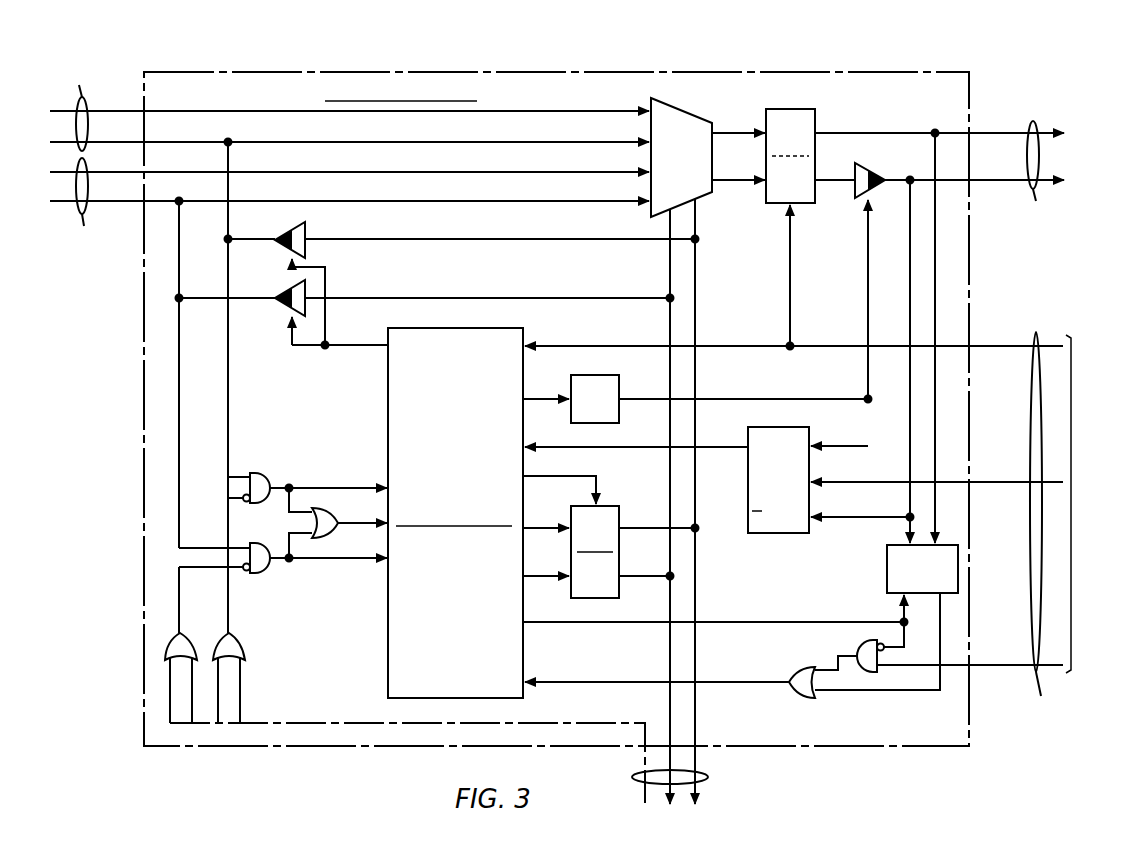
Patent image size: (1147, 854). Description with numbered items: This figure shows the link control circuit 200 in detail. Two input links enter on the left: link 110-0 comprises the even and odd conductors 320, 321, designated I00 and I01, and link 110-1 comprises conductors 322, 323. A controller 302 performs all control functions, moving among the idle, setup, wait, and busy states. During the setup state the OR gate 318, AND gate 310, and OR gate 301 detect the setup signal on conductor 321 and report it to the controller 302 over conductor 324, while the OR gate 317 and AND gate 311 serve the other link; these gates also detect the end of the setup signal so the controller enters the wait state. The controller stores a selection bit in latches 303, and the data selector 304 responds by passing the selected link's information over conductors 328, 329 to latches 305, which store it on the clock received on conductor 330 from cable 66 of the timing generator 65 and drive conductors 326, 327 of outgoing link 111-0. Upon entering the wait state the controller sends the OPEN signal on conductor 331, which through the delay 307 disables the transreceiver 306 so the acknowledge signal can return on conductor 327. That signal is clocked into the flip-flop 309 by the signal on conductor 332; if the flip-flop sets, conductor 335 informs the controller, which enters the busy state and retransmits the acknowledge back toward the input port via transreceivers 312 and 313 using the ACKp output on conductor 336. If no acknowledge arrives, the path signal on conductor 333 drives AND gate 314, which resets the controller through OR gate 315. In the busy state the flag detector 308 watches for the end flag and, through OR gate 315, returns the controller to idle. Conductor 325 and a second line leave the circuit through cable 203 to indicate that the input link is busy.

The link control circuit 200 is at (968, 64).
The link 110-0 is at (70, 99).
The link 110-1 is at (72, 213).
The link 111-0 is at (1032, 183).
The conductor 320 is at (160, 111).
The conductor 321 is at (160, 142).
The conductor 322 is at (160, 172).
The conductor 323 is at (160, 201).
The data selector 304 is at (655, 99).
The conductor 328 is at (740, 130).
The conductor 329 is at (740, 178).
The latches 305 is at (775, 109).
The transreceiver 306 is at (860, 167).
The conductor 326 is at (1000, 127).
The conductor 327 is at (1000, 174).
The transreceiver 313 is at (279, 227).
The transreceiver 312 is at (279, 287).
The conductor 336 is at (356, 343).
The controller 302 is at (468, 328).
The delay 307 is at (583, 375).
The conductor 331 is at (545, 394).
The conductor 335 is at (548, 442).
The latches 303 is at (606, 506).
The flip-flop 309 is at (760, 427).
The conductor 330 is at (996, 343).
The conductor 332 is at (998, 478).
The conductor 333 is at (1000, 663).
The AND gate 310 is at (257, 473).
The AND gate 311 is at (262, 573).
The OR gate 301 is at (332, 538).
The conductor 324 is at (697, 707).
The signal line 325 is at (668, 707).
The OR gate 317 is at (195, 633).
The OR gate 318 is at (243, 640).
The flag detector 308 is at (886, 572).
The AND gate 314 is at (864, 646).
The OR gate 315 is at (806, 669).
The cable 203 is at (708, 777).
The cable 66 is at (1032, 534).
The timing generator 65 is at (1097, 504).